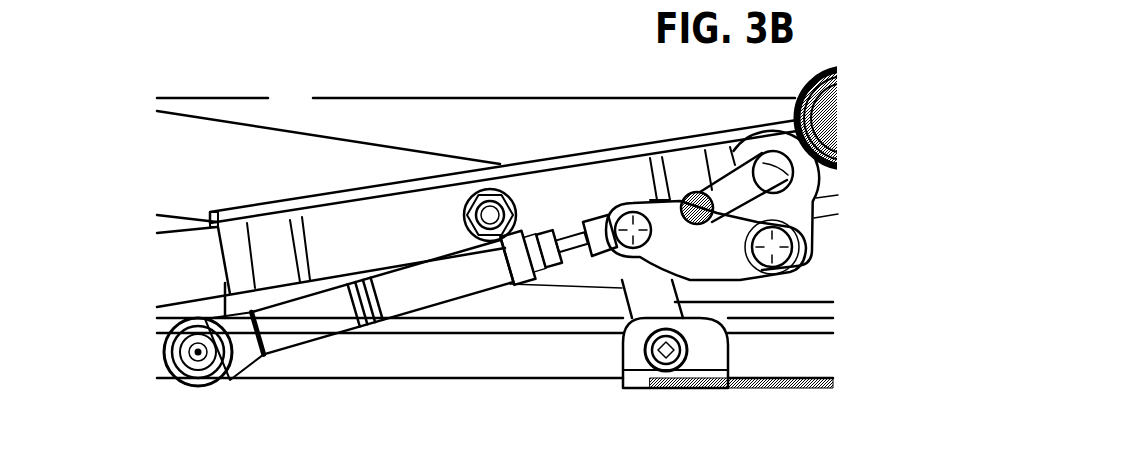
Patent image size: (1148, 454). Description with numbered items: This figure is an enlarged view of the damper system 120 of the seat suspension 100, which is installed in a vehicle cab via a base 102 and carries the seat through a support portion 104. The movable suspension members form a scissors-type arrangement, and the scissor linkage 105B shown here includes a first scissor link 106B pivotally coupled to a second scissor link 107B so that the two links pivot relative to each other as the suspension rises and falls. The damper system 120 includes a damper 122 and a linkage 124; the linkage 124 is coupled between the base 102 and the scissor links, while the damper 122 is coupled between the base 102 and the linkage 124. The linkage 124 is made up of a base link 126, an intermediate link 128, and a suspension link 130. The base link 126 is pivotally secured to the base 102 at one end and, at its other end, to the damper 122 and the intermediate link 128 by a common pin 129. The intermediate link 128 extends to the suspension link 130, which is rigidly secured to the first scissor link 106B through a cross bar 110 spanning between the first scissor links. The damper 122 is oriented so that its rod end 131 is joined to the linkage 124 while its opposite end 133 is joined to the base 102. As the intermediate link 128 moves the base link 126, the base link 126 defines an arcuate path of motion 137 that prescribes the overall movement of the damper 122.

The suspension 100 is at (157, 23).
The base 102 is at (262, 380).
The support portion 104 is at (543, 97).
The scissor linkage 105B is at (234, 99).
The first scissor link 106B is at (542, 197).
The second scissor link 107B is at (160, 172).
The cross bar 110 is at (745, 215).
The damper system 120 is at (578, 339).
The damper 122 is at (383, 300).
The linkage 124 is at (775, 298).
The base link 126 is at (625, 290).
The intermediate link 128 is at (710, 258).
The common pin 129 is at (634, 228).
The suspension link 130 is at (832, 137).
The rod end 131 is at (597, 222).
The opposite end 133 is at (166, 353).
The arcuate path of motion 137 is at (697, 240).